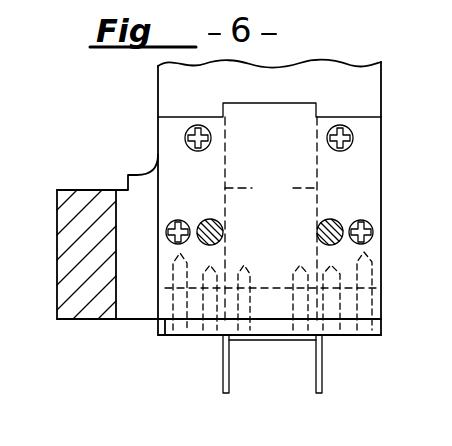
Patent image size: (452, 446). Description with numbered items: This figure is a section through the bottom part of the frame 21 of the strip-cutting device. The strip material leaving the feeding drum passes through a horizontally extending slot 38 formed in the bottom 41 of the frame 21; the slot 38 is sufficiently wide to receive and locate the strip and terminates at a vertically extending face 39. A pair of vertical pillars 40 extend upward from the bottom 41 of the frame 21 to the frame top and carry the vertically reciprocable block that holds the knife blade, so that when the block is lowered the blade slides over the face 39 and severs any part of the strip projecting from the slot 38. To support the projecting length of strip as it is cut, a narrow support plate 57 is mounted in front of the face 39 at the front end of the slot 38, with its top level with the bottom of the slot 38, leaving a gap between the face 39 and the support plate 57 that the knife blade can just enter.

The frame 21 is at (88, 202).
The slot 38 is at (271, 218).
The vertically extending face 39 is at (167, 336).
The vertical pillars 40 is at (322, 231).
The bottom of the frame 41 is at (368, 90).
The support plate 57 is at (379, 325).